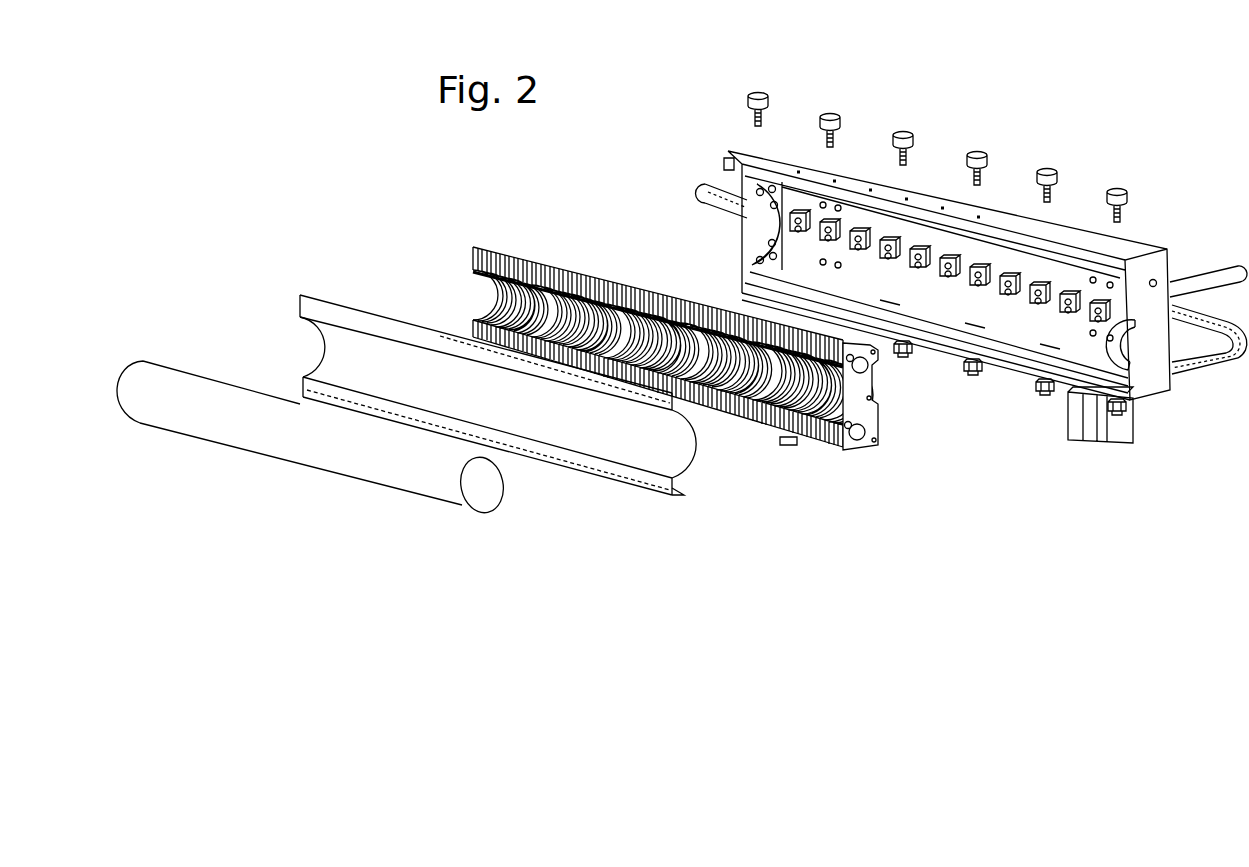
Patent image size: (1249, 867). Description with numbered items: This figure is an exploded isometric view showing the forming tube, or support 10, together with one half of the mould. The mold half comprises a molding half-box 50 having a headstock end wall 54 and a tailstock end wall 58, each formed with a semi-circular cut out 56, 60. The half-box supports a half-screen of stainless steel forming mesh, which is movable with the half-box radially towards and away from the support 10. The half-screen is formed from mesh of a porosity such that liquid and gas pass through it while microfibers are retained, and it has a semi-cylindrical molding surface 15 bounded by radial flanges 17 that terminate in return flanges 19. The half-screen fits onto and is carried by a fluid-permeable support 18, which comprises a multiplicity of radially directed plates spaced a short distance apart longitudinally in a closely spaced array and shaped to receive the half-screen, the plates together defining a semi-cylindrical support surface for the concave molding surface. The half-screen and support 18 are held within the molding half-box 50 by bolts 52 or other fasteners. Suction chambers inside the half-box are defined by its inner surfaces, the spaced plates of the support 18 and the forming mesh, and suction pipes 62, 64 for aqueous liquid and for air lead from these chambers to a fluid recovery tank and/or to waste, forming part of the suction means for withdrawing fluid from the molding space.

The support 10 is at (482, 495).
The semi-cylindrical molding surface 15 is at (377, 363).
The radial flanges 17 is at (300, 305).
The return flanges 19 is at (302, 297).
The fluid-permeable support 18 is at (812, 450).
The molding half-box 50 is at (1030, 230).
The bolts 52 is at (1118, 192).
The headstock end wall 54 is at (738, 268).
The semi-circular cut out 56 is at (762, 232).
The tailstock end wall 58 is at (1137, 400).
The semi-circular cut out 60 is at (1133, 367).
The suction pipe 62 is at (1190, 362).
The suction pipe 64 is at (1208, 273).